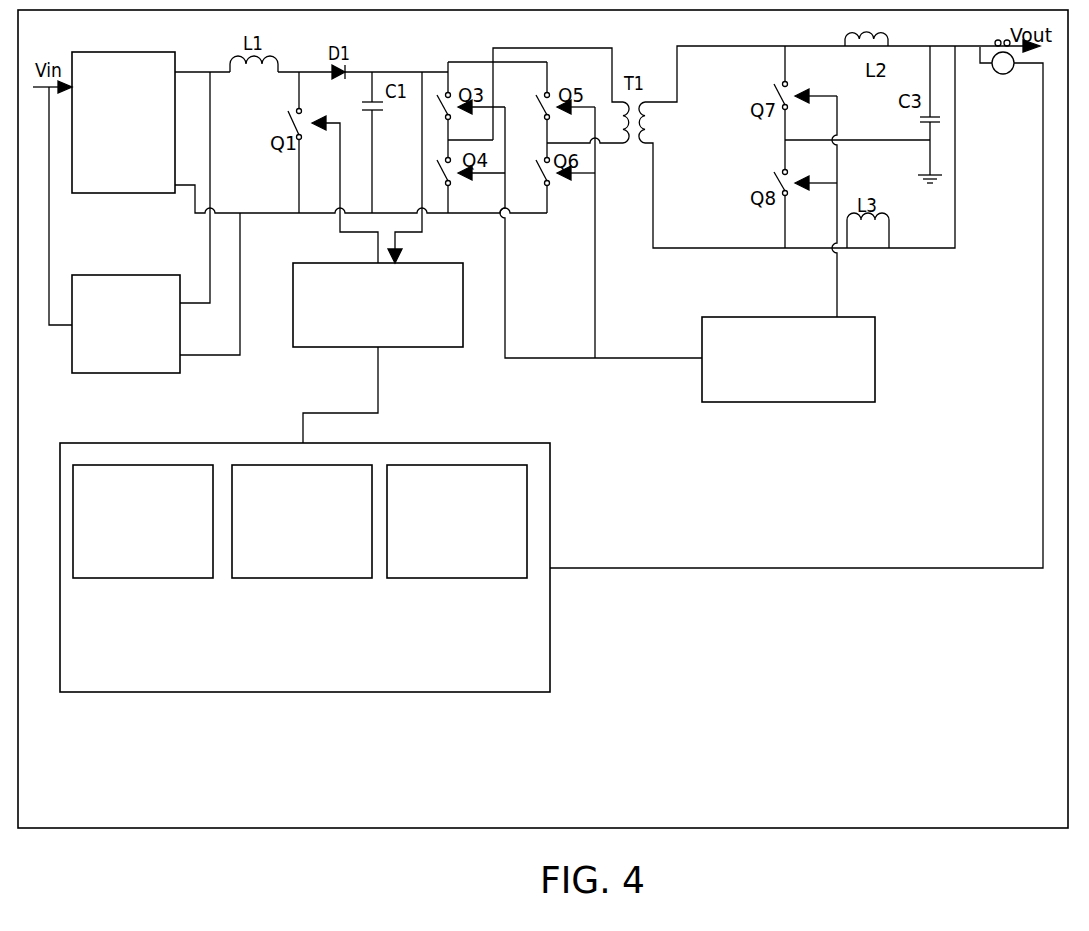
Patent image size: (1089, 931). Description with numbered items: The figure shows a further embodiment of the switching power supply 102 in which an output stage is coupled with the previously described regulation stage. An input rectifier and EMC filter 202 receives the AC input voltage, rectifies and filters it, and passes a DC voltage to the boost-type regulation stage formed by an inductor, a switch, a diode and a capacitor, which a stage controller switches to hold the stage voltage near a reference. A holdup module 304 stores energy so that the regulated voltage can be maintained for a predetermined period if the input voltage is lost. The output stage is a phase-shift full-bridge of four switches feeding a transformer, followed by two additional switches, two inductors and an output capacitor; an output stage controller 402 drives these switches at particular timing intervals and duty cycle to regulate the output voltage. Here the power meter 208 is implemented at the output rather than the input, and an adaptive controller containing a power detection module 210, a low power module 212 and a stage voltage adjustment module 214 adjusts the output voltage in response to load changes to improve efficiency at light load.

The switching power supply 102 is at (557, 817).
The input rectifier and EMC filter 202 is at (139, 181).
The power meter 208 is at (1003, 75).
The power detection module 210 is at (158, 569).
The low power module 212 is at (317, 557).
The stage voltage adjustment module 214 is at (473, 569).
The holdup module 304 is at (142, 359).
The output stage controller 402 is at (803, 394).